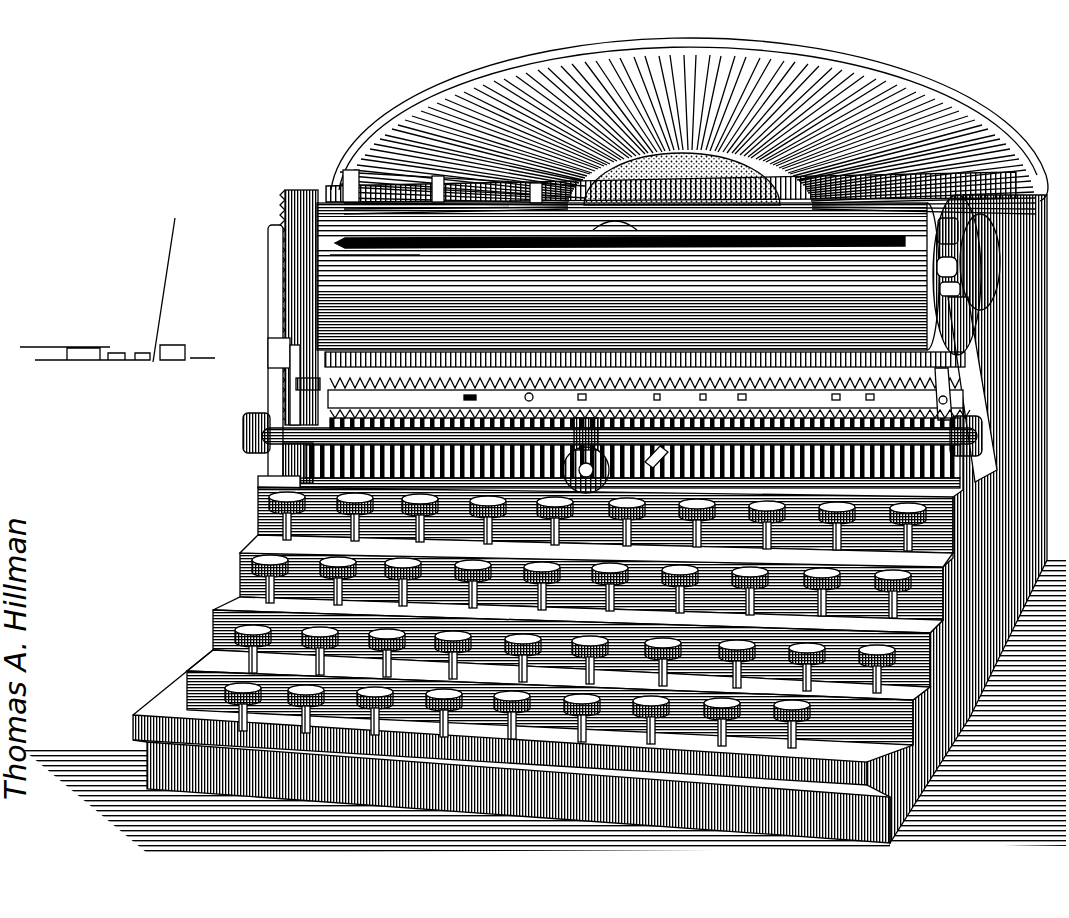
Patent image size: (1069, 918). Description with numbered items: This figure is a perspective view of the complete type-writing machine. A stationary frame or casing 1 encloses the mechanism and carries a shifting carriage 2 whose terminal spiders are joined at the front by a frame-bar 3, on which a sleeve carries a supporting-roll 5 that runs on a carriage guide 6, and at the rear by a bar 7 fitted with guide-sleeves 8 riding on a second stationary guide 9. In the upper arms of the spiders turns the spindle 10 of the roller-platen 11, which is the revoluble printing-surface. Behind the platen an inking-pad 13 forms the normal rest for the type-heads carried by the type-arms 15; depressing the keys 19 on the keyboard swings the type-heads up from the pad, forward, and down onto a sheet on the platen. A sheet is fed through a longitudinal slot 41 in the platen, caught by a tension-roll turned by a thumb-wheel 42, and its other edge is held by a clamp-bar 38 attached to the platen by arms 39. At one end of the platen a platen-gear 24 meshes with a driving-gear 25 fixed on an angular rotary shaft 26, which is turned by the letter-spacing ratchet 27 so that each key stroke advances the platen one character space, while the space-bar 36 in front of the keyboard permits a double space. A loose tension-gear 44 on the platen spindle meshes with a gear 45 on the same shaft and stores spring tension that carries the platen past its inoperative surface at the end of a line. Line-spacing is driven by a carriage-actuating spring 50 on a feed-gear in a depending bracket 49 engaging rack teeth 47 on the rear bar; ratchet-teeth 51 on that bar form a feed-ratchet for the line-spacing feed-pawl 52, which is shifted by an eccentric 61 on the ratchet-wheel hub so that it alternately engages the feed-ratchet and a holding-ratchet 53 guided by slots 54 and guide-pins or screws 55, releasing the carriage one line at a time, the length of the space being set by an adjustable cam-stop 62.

The frame or casing 1 is at (240, 555).
The shifting frame or carriage 2 is at (270, 350).
The frame-bar 3 is at (264, 446).
The supporting-roll 5 is at (584, 493).
The carriage guide or track 6 is at (262, 484).
The bar 7 is at (296, 385).
The guide-sleeves 8 is at (645, 399).
The second stationary guide 9 is at (290, 368).
The spindle 10 is at (937, 267).
The roller-platen 11 is at (628, 276).
The inking-pad 13 is at (682, 179).
The type-arms 15 is at (462, 96).
The keys 19 is at (262, 500).
The platen-gear 24 is at (375, 264).
The driving-gear 25 is at (283, 470).
The rotary shaft 26 is at (805, 488).
The letter-spacing ratchet 27 is at (589, 472).
The space-bar 36 is at (133, 713).
The clamp-bar 38 is at (530, 224).
The arms 39 is at (335, 188).
The longitudinal slot 41 is at (468, 244).
The thumb-wheel 42 is at (938, 234).
The tension-gear 44 is at (290, 236).
The gear 45 is at (256, 414).
The rack teeth 47 is at (845, 401).
The depending bracket 49 is at (694, 401).
The carriage-actuating spring 50 is at (665, 401).
The ratchet-teeth 51 is at (878, 401).
The line-spacing feed-pawl 52 is at (731, 401).
The holding-ratchet 53 is at (571, 401).
The slots 54 is at (459, 401).
The guide-pins or screws 55 is at (520, 400).
The eccentric 61 is at (648, 480).
The adjustable cam-stop 62 is at (935, 400).